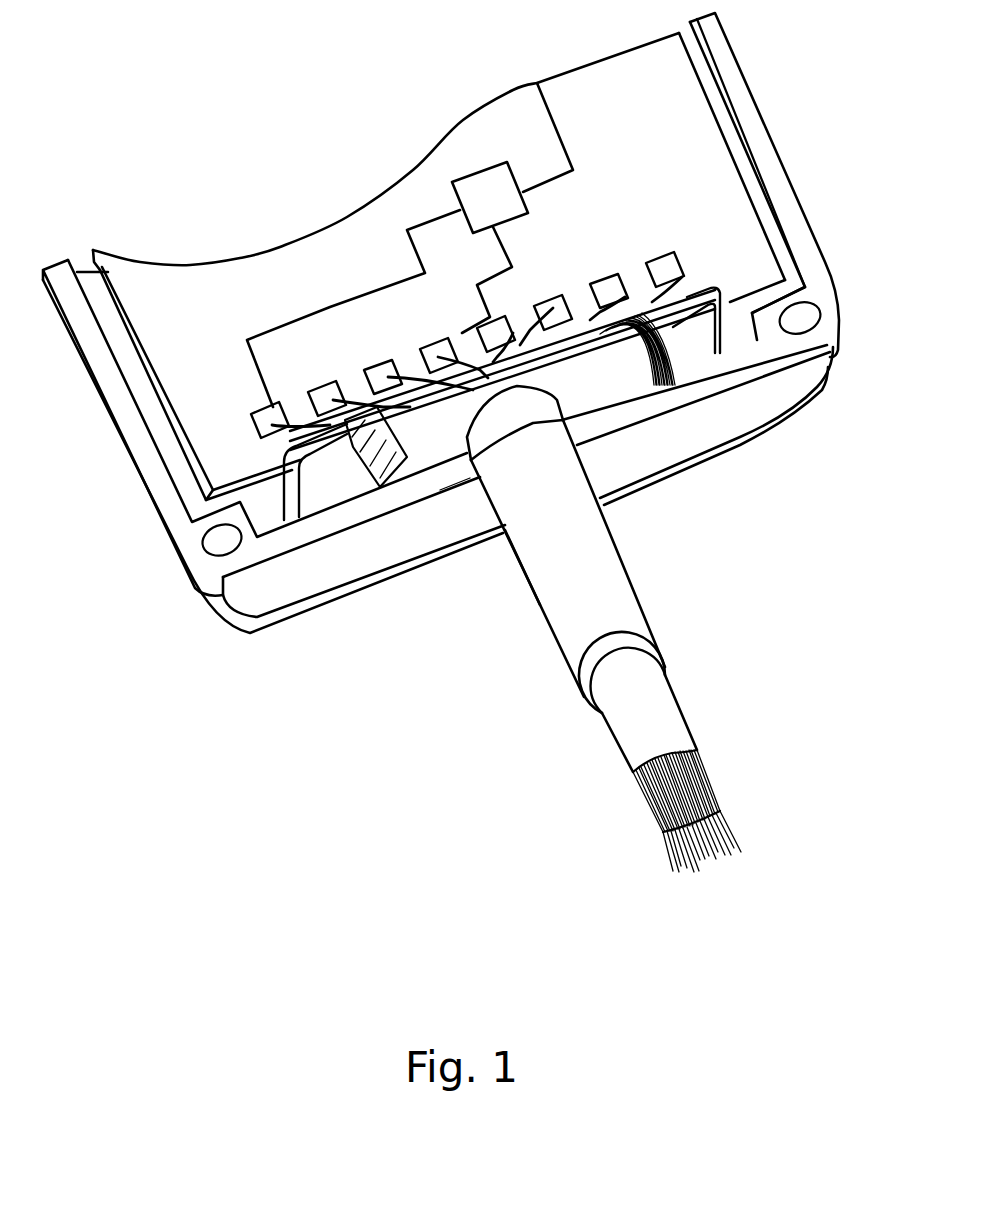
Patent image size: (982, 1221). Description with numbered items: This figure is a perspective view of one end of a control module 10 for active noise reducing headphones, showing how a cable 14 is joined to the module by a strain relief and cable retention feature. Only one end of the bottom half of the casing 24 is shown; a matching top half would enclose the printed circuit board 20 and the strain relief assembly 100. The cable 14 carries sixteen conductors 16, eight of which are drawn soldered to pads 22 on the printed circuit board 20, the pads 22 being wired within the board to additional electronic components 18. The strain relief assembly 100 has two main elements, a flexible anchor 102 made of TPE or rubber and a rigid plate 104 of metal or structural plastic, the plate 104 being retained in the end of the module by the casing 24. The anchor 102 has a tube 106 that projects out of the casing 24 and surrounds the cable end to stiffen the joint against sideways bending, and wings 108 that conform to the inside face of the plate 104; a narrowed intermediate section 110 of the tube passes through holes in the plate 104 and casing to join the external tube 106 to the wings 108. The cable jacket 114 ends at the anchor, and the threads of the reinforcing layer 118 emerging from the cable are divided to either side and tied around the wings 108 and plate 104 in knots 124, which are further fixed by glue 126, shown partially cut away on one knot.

The control module 10 is at (757, 75).
The cable 14 is at (666, 714).
The conductors 16 is at (662, 290).
The electronic components 18 is at (487, 188).
The printed circuit board 20 is at (637, 117).
The pads 22 is at (560, 313).
The casing 24 is at (800, 234).
The strain relief assembly 100 is at (578, 393).
The anchor 102 is at (595, 562).
The plate 104 is at (638, 383).
The tube 106 is at (530, 590).
The wings 108 is at (277, 452).
The intermediate section 110 is at (468, 467).
The jacket 114 is at (630, 727).
The reinforcing layer 118 is at (698, 297).
The knots 124 is at (383, 473).
The glue 126 is at (347, 448).